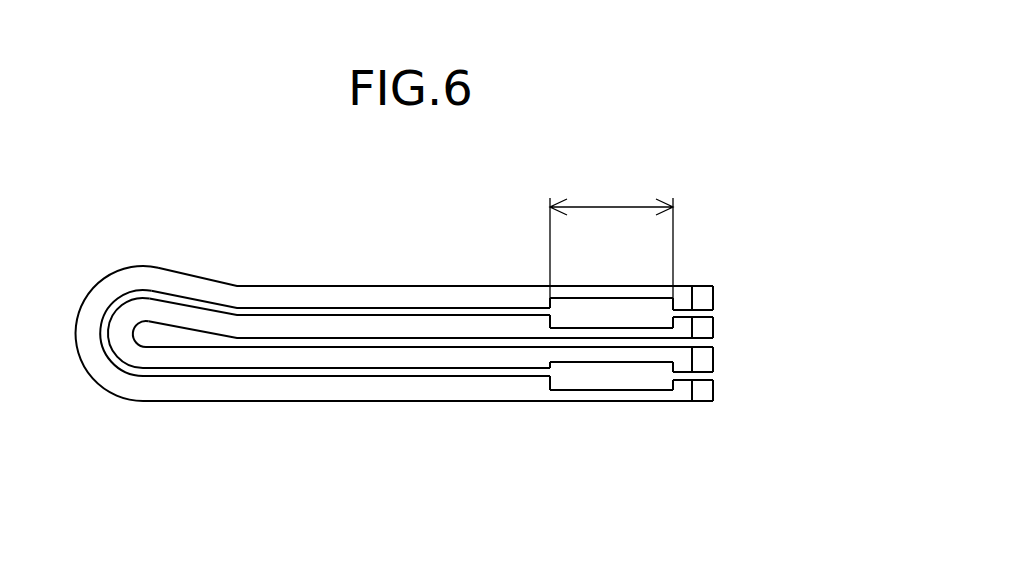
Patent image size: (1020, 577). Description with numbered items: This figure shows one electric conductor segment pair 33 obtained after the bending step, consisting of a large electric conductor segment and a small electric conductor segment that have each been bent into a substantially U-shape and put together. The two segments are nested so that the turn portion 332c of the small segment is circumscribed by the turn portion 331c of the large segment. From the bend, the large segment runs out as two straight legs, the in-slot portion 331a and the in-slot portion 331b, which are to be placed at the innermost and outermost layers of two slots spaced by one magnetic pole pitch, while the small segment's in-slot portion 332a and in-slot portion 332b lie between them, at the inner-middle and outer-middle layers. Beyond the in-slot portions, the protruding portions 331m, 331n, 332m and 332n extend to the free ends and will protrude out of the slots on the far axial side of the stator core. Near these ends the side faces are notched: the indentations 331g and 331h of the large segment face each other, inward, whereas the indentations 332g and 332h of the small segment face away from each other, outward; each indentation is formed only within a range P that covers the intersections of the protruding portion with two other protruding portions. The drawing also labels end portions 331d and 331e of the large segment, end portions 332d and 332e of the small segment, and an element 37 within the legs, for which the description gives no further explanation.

The electric conductor segment pair 33 is at (238, 240).
The in-slot portion of the large electric conductor segment 331a is at (330, 297).
The in-slot portion of the large electric conductor segment 331b is at (307, 395).
The turn portion of the large electric conductor segment 331c is at (113, 373).
The first end portion of first flexible board 331d is at (713, 299).
The second end portion of first flexible board 331e is at (713, 391).
The indentation 331g is at (585, 300).
The indentation 331h is at (570, 390).
The protruding portion of the large electric conductor segment 331m is at (544, 303).
The protruding portion of the large electric conductor segment 331n is at (540, 383).
The in-slot portion of the small electric conductor segment 332a is at (472, 325).
The in-slot portion of the small electric conductor segment 332b is at (442, 358).
The turn portion of the small electric conductor segment 332c is at (123, 335).
The first end portion of second flexible board 332d is at (713, 328).
The second end portion of second flexible board 332e is at (713, 360).
The indentation 332g is at (617, 327).
The indentation 332h is at (632, 362).
The protruding portion of the small electric conductor segment 332m is at (533, 328).
The protruding portion of the small electric conductor segment 332n is at (530, 360).
The conductor layer 37 is at (407, 325).